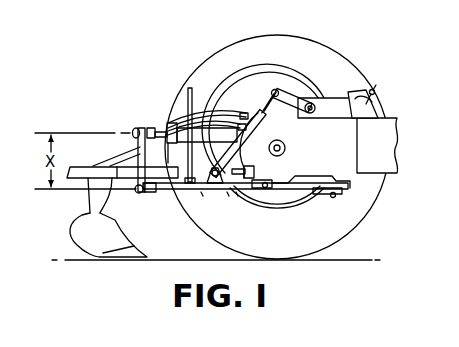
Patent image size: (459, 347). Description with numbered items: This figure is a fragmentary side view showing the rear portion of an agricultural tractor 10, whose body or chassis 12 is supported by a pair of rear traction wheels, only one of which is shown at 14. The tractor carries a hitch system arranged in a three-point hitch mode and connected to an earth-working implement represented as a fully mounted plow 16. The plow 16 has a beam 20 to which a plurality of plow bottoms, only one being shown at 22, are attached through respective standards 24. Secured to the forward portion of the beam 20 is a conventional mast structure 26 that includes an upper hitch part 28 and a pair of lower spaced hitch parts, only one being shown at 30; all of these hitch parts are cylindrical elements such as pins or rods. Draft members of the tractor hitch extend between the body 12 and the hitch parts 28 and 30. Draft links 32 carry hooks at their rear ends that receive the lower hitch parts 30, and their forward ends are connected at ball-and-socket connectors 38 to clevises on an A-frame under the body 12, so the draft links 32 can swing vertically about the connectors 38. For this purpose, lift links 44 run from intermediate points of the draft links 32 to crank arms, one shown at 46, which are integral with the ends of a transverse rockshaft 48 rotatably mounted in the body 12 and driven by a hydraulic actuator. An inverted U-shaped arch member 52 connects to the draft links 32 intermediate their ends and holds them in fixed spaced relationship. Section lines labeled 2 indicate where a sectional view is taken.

The agricultural tractor 10 is at (391, 58).
The body or chassis 12 is at (394, 140).
The rear traction wheel 14 is at (268, 36).
The fully mounted plow 16 is at (112, 121).
The beam 20 is at (80, 166).
The plow bottom 22 is at (119, 237).
The standard 24 is at (89, 203).
The mast structure 26 is at (153, 150).
The upper hitch part 28 is at (142, 128).
The lower hitch part 30 is at (140, 194).
The draft link 32 is at (197, 191).
The ball-and-socket connector 38 is at (272, 180).
The lift link 44 is at (259, 128).
The crank arm 46 is at (288, 96).
The transverse rockshaft 48 is at (311, 114).
The inverted U-shaped arch member 52 is at (194, 97).
The section line 2- 2 is at (253, 185).